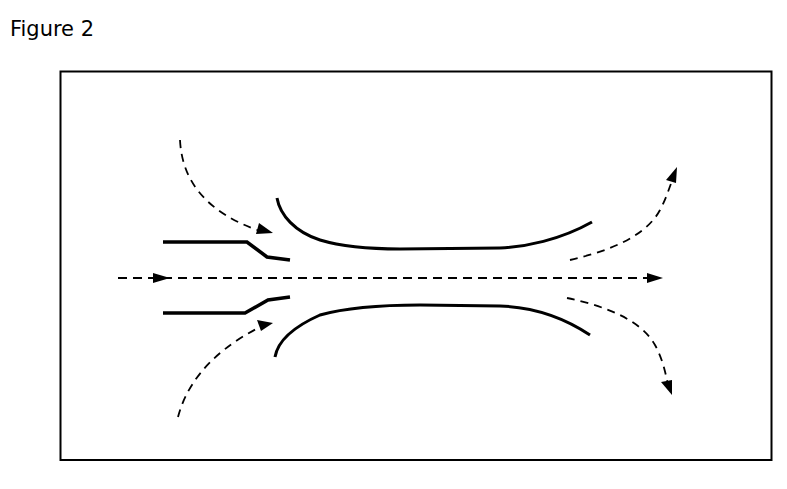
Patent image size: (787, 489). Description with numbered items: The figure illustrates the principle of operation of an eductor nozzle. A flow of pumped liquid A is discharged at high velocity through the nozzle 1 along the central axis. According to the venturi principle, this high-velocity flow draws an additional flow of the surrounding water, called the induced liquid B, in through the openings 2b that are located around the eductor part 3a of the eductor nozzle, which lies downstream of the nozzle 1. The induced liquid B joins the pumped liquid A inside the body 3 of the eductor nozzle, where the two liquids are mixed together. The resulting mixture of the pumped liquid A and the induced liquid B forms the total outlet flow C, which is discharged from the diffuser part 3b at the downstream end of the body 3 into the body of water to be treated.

The nozzle 1 is at (157, 240).
The openings 2b is at (252, 202).
The body 3 is at (422, 303).
The eductor part 3a is at (305, 233).
The diffuser part 3b is at (553, 237).
The flow of pumped liquid A is at (370, 275).
The induced liquid B is at (220, 282).
The total outlet flow C is at (638, 281).